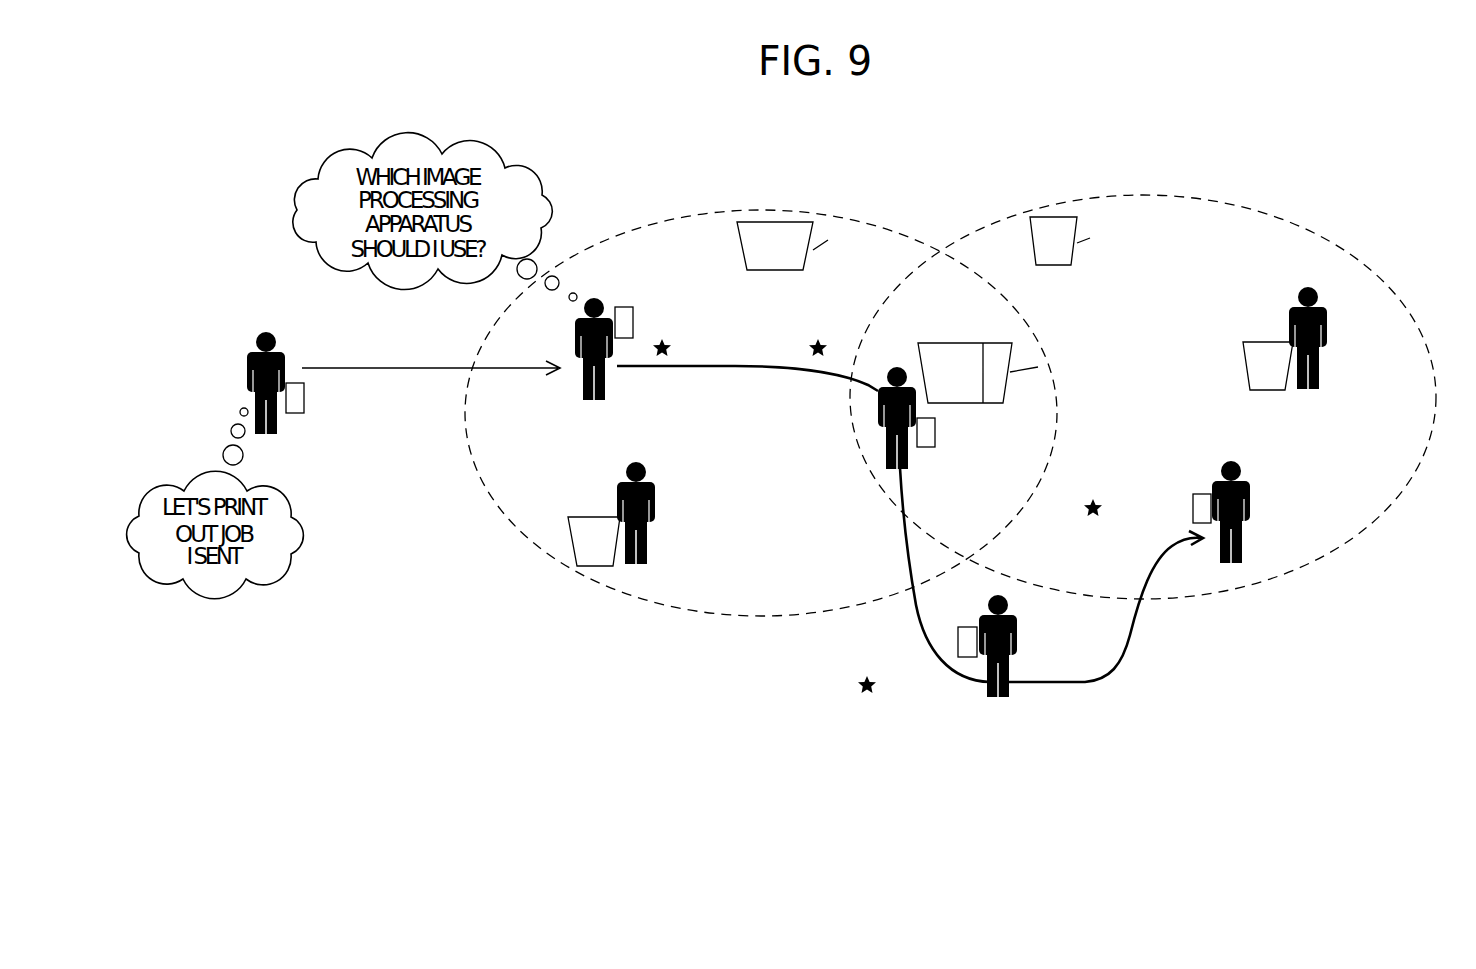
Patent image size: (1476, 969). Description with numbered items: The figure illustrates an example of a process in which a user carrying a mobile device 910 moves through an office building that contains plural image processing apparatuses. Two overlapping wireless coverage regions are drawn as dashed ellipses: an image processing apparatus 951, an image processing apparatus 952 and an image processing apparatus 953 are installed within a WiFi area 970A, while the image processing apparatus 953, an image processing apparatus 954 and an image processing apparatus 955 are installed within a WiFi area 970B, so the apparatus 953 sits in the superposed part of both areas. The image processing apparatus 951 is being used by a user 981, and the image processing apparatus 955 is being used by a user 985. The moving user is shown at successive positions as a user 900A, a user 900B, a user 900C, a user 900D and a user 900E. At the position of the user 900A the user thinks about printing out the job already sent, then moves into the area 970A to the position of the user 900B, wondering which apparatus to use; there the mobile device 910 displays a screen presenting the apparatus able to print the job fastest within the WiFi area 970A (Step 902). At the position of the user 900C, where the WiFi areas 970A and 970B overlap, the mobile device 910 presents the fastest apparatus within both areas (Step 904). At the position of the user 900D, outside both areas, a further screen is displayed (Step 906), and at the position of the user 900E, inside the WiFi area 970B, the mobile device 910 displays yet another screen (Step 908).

The user 900A is at (247, 366).
The user 900B is at (575, 330).
The user 900C is at (876, 398).
The user 900D is at (1020, 632).
The user 900E is at (1253, 499).
The mobile device 910 is at (304, 398).
The image processing apparatus 951 is at (590, 517).
The image processing apparatus 952 is at (774, 222).
The image processing apparatus 953 is at (965, 343).
The image processing apparatus 954 is at (1053, 217).
The image processing apparatus 955 is at (1263, 343).
The WiFi area 970A is at (876, 222).
The WiFi area 970B is at (1288, 220).
The user 981 is at (657, 500).
The user 985 is at (1328, 325).
The Step 902 is at (706, 349).
The Step 904 is at (862, 349).
The Step 906 is at (911, 687).
The Step 908 is at (1137, 508).